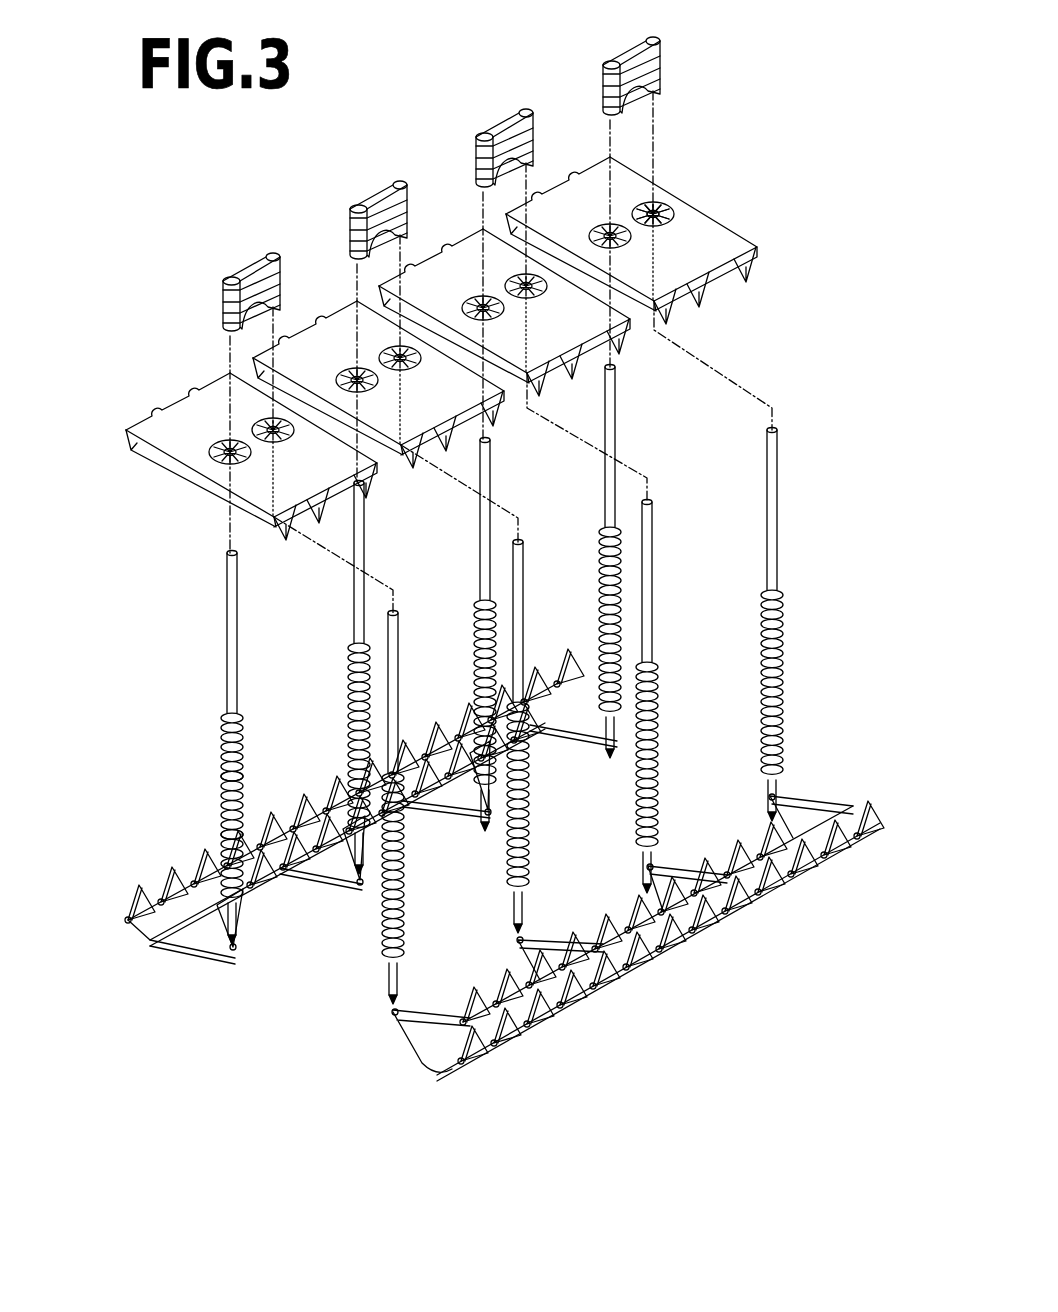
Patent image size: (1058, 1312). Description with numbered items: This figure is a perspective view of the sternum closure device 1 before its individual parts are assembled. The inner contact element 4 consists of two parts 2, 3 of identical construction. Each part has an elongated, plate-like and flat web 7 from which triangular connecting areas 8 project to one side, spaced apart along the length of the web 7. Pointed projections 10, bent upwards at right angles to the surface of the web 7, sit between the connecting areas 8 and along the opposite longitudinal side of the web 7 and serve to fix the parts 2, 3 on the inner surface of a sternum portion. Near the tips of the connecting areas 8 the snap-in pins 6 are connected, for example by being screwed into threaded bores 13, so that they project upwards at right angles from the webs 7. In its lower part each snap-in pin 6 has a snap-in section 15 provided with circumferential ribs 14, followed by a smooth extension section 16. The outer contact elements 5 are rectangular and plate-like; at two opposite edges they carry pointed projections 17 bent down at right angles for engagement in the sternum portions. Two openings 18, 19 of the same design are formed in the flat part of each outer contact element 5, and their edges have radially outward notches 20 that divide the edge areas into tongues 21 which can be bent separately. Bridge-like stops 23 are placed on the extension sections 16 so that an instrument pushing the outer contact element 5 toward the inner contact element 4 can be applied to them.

The sternum closure device 1 is at (805, 388).
The part of the inner contact element 2 is at (133, 933).
The part of the inner contact element 3 is at (428, 1083).
The inner contact element 4 is at (145, 947).
The outer contact element 5 is at (180, 400).
The snap-in pin 6 is at (189, 748).
The web 7 is at (652, 930).
The connecting area 8 is at (403, 1023).
The pointed projection 10 is at (612, 932).
The threaded bore 13 is at (240, 947).
The circumferential rib 14 is at (232, 778).
The snap-in section 15 is at (232, 831).
The extension section 16 is at (232, 597).
The pointed projection 17 is at (758, 270).
The opening 18 is at (212, 456).
The opening 19 is at (280, 438).
The notch 20 is at (656, 205).
The tongue 21 is at (665, 221).
The bridge-like stop 23 is at (660, 54).